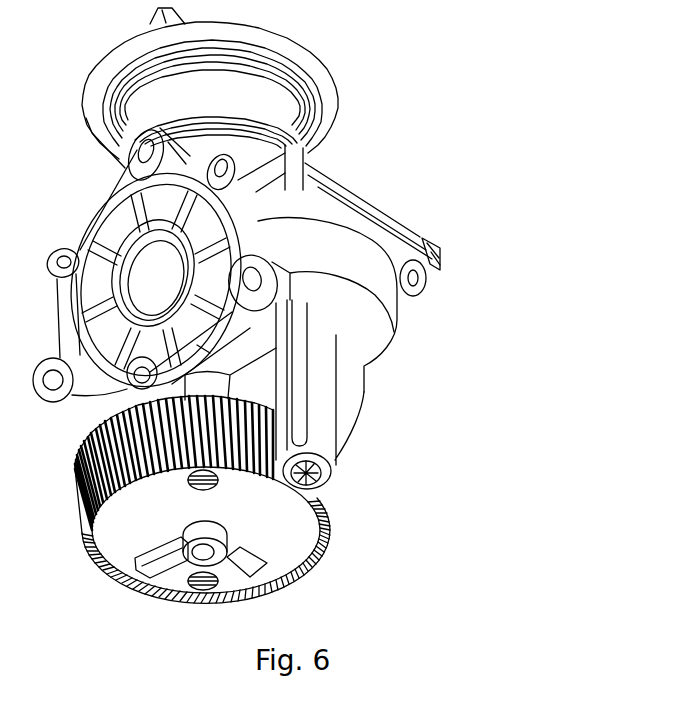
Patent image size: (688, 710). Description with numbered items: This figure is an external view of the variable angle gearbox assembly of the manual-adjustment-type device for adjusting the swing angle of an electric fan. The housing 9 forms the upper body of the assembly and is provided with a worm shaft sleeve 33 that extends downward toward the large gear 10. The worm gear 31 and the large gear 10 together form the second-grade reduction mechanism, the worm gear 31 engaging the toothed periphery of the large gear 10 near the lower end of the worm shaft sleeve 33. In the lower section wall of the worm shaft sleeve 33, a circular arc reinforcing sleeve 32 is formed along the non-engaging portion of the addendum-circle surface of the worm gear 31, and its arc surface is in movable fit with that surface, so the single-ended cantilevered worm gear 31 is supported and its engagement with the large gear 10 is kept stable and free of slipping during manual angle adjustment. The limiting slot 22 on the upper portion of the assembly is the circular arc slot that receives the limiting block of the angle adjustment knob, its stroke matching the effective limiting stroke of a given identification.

The housing 9 is at (268, 265).
The large gear 10 is at (286, 499).
The limiting slot 22 is at (241, 88).
The worm gear 31 is at (390, 461).
The circular arc reinforcing sleeve 32 is at (411, 400).
The worm shaft sleeve 33 is at (391, 370).